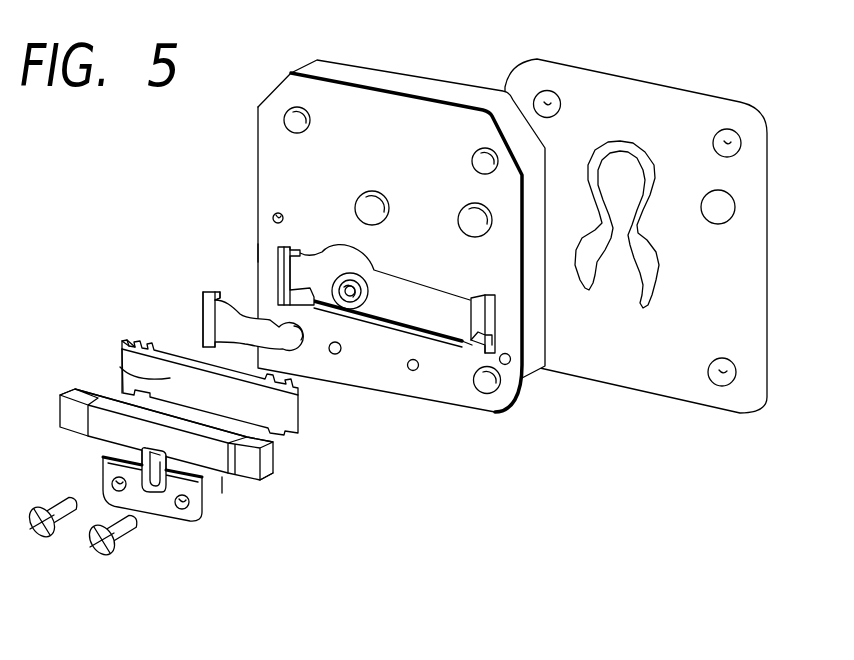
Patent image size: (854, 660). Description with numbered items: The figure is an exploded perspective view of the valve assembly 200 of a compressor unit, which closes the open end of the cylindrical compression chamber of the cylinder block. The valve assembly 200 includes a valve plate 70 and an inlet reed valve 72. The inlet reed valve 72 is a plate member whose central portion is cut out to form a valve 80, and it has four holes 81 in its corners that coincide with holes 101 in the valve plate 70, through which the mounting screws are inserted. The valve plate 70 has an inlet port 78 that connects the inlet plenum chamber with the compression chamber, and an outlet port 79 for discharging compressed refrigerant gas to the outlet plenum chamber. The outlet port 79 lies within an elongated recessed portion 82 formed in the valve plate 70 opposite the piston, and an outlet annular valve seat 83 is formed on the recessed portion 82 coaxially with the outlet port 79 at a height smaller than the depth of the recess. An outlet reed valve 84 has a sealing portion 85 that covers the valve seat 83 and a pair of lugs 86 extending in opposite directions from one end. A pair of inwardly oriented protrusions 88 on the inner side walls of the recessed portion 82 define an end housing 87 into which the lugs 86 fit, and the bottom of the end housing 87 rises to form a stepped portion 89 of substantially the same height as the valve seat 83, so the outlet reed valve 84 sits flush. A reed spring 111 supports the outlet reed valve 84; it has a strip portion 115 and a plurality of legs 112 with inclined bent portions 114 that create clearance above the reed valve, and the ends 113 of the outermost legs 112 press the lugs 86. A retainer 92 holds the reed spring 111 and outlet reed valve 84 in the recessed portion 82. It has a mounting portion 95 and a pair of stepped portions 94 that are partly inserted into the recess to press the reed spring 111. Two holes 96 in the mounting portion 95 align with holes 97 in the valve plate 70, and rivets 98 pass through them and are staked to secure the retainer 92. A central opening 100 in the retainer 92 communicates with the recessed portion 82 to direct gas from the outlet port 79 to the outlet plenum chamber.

The valve plate 70 is at (337, 72).
The inlet reed valve 72 is at (662, 83).
The inlet port 78 is at (368, 204).
The outlet port 79 is at (355, 276).
The valve 80 is at (617, 165).
The holes 81 is at (547, 102).
The elongated recessed portion 82 is at (453, 343).
The outlet annular valve seat 83 is at (343, 272).
The outlet reed valve 84 is at (214, 292).
The sealing portion 85 is at (255, 298).
The lugs 86 is at (203, 345).
The end housing 87 is at (260, 252).
The protrusions 88 is at (277, 247).
The stepped portion 89 is at (305, 276).
The retainer 92 is at (222, 478).
The stepped portions 94 is at (62, 407).
The mounting portion 95 is at (189, 524).
The holes 96 is at (112, 484).
The holes 97 is at (410, 372).
The rivets 98 is at (92, 553).
The opening 100 is at (157, 487).
The holes 101 is at (290, 118).
The reed spring 111 is at (300, 427).
The legs 112 is at (120, 338).
The ends 113 is at (133, 330).
The bent portions 114 is at (118, 352).
The strip portion 115 is at (167, 380).
The valve assembly 200 is at (477, 487).